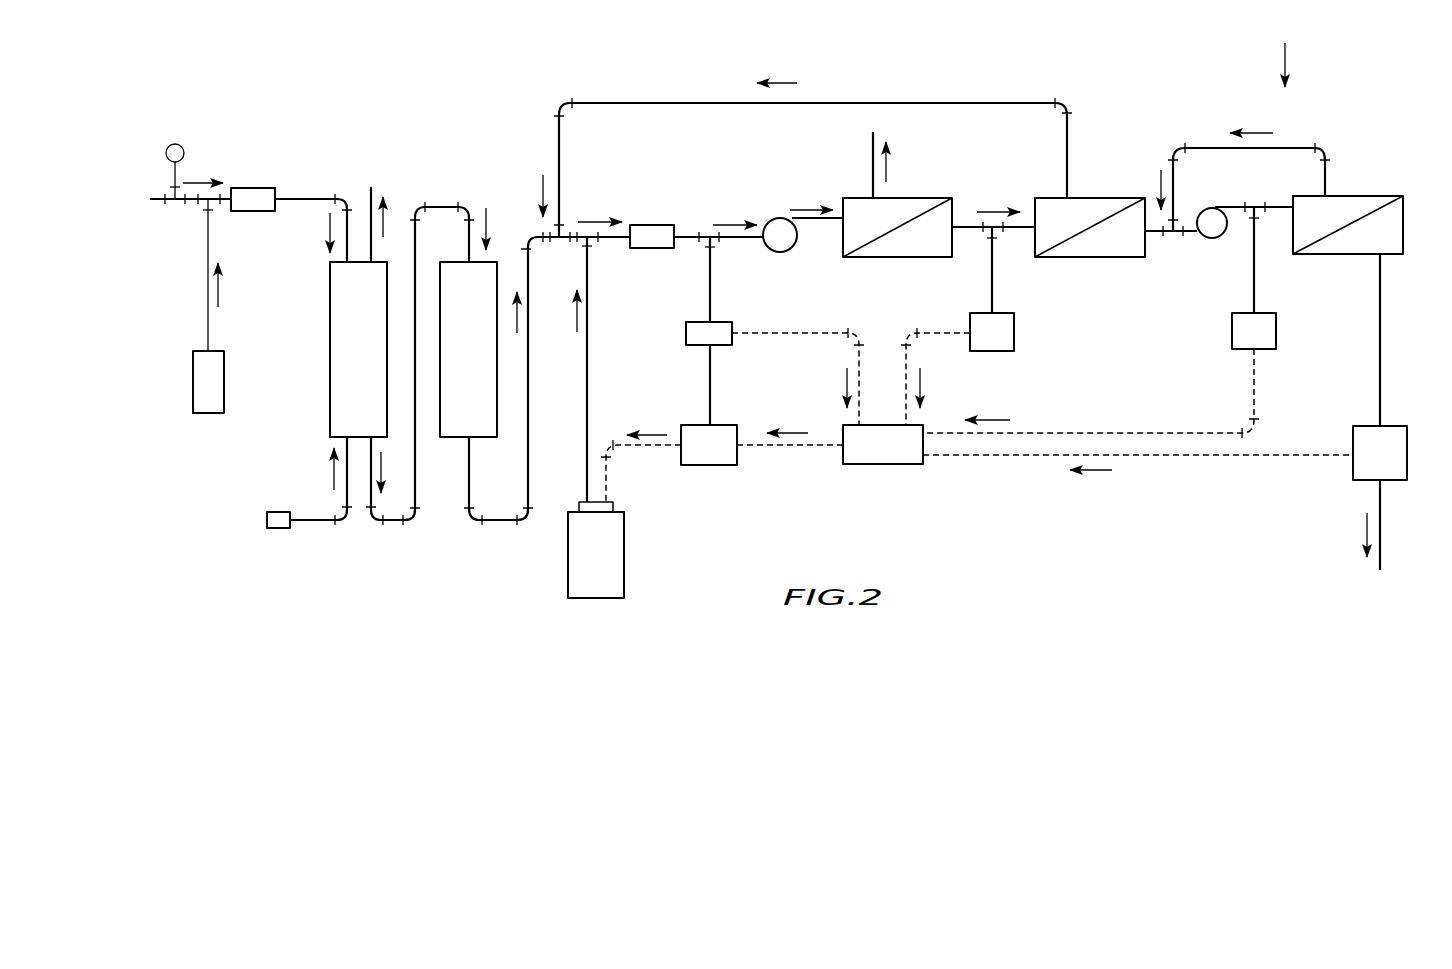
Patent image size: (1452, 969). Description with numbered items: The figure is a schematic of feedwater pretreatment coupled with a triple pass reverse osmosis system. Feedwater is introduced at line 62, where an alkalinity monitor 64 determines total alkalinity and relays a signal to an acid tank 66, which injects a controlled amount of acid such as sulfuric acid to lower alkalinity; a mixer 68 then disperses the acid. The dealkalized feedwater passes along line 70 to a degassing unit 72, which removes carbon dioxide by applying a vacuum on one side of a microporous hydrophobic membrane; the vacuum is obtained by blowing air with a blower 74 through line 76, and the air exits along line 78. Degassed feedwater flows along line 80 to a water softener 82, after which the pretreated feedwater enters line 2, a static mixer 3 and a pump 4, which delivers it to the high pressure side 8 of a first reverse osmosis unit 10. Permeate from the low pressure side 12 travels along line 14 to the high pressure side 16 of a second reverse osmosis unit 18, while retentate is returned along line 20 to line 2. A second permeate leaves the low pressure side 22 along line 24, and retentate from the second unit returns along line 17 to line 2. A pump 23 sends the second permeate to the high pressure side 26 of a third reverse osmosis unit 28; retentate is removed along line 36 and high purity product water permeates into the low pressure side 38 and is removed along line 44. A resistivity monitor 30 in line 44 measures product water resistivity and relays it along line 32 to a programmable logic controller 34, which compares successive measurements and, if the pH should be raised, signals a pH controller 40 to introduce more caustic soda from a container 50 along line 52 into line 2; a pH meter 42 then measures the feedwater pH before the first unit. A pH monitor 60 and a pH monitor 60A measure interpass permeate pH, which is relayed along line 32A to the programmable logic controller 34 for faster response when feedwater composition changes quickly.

The feedwater line 2 is at (530, 345).
The static mixer 3 is at (648, 225).
The pump 4 is at (788, 250).
The high pressure side 8 is at (889, 225).
The first reverse osmosis unit 10 is at (898, 214).
The low pressure side 12 is at (913, 250).
The line 14 is at (963, 227).
The high pressure side 16 is at (1085, 220).
The line 17 is at (676, 103).
The second reverse osmosis unit 18 is at (1085, 204).
The line 20 is at (873, 132).
The low pressure side 22 is at (1100, 252).
The pump 23 is at (1218, 238).
The line 24 is at (1190, 232).
The high pressure side 26 is at (1342, 235).
The third reverse osmosis unit 28 is at (1342, 216).
The resistivity monitor 30 is at (1407, 455).
The line 32 is at (1182, 456).
The line 32A is at (1070, 433).
The programmable logic controller 34 is at (870, 465).
The line 36 is at (1217, 148).
The low pressure side 38 is at (1355, 252).
The pH controller 40 is at (705, 466).
The pH meter 42 is at (725, 322).
The line 44 is at (1381, 305).
The container 50 is at (624, 548).
The line 52 is at (588, 360).
The pH monitor 60 is at (1014, 330).
The pH monitor 60A is at (1232, 330).
The line 62 is at (155, 201).
The alkalinity monitor 64 is at (184, 153).
The acid tank 66 is at (224, 390).
The mixer 68 is at (253, 188).
The line 70 is at (305, 199).
The degassing unit 72 is at (338, 342).
The blower 74 is at (283, 512).
The line 76 is at (313, 521).
The line 78 is at (372, 190).
The line 80 is at (415, 478).
The water softener 82 is at (460, 272).